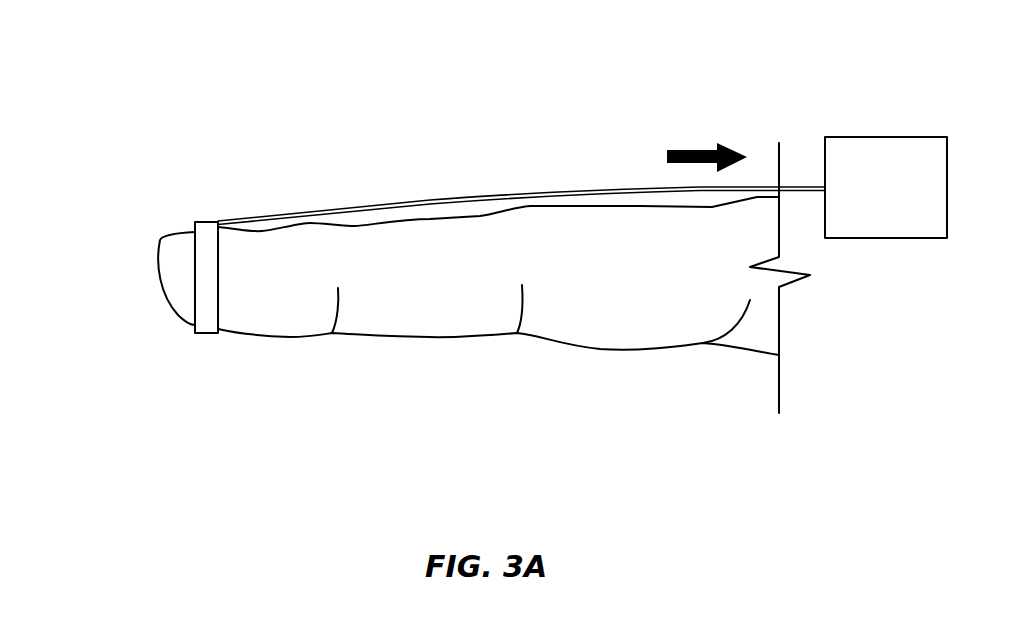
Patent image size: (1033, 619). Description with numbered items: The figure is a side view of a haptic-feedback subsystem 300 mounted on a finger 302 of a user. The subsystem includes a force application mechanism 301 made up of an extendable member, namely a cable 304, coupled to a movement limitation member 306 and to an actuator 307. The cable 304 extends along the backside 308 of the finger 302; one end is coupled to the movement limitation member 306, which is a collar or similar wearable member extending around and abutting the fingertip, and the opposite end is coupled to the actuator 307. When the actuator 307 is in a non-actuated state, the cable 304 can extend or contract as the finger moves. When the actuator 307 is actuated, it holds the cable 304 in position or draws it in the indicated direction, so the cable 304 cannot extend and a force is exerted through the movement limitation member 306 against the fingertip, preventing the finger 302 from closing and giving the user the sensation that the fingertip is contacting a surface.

The haptic-feedback subsystem 300 is at (105, 85).
The force application mechanism 301 is at (820, 95).
The finger 302 is at (620, 350).
The cable 304 is at (573, 190).
The movement limitation member 306 is at (206, 333).
The actuator 307 is at (872, 210).
The backside 308 is at (442, 218).